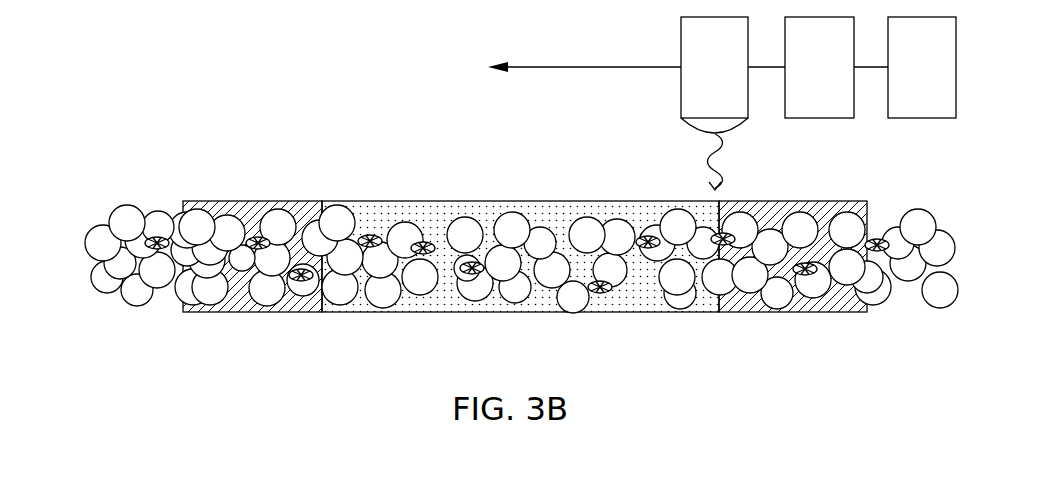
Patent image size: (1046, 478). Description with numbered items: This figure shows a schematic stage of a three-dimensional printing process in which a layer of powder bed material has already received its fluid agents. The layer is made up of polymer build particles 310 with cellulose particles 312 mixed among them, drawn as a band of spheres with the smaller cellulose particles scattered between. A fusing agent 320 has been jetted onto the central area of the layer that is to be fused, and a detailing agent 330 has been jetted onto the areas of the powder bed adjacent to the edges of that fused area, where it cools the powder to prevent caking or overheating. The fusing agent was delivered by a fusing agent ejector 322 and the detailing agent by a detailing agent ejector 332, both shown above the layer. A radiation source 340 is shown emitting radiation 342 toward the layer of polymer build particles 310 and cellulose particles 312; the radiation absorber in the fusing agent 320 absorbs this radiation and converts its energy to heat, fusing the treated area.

The polymer build particles 310 is at (100, 240).
The cellulose particles 312 is at (155, 238).
The fusing agent 320 is at (420, 220).
The detailing agent 330 is at (303, 215).
The radiation source 340 is at (695, 78).
The detailing agent ejector 332 is at (800, 78).
The fusing agent ejector 322 is at (903, 78).
The radiation 342 is at (705, 180).